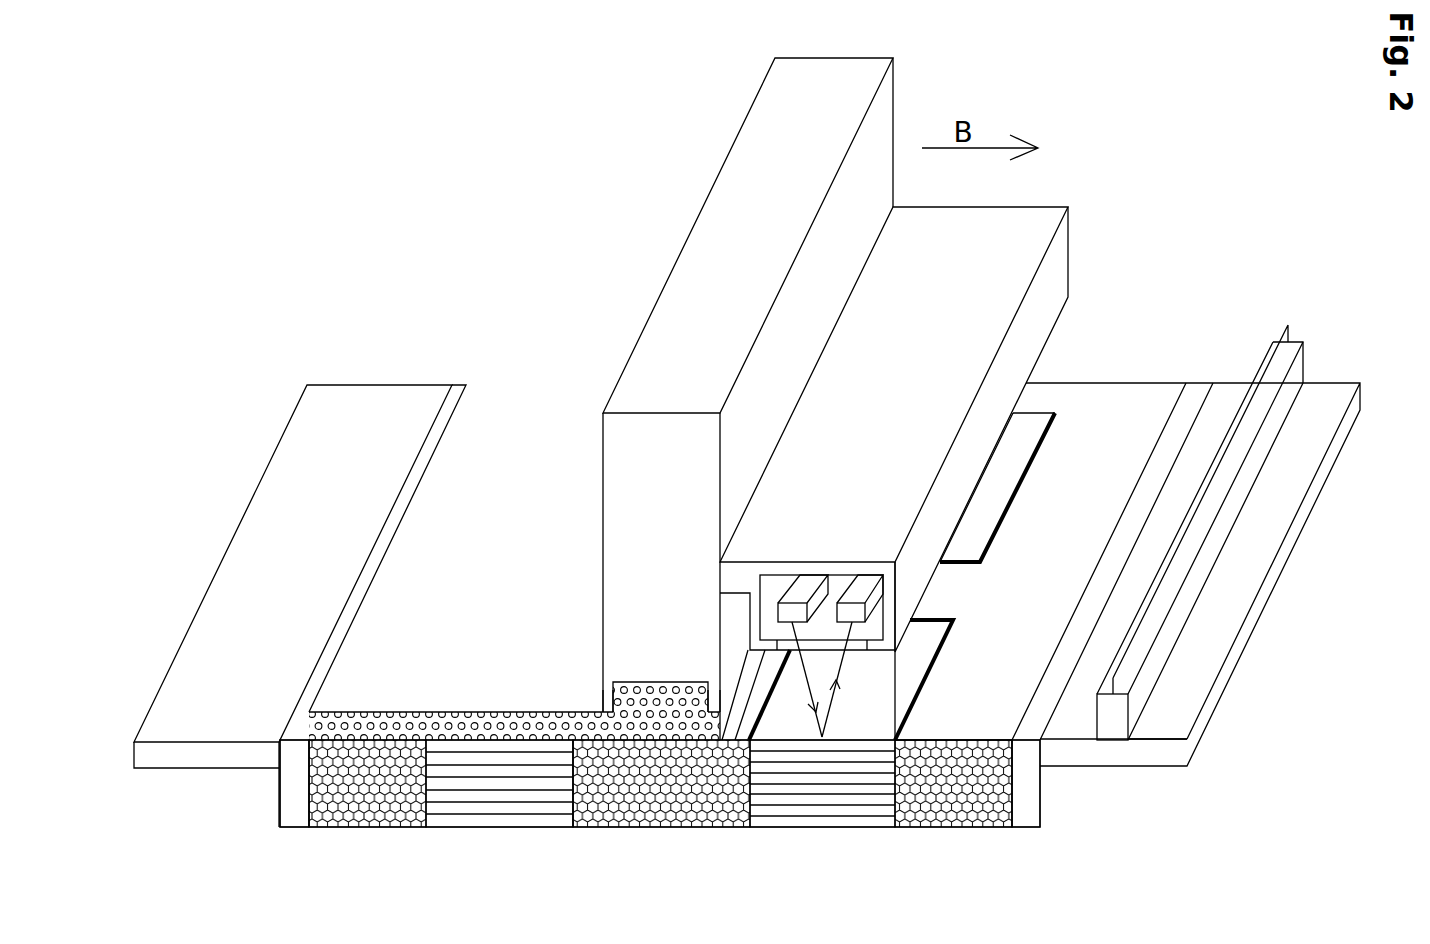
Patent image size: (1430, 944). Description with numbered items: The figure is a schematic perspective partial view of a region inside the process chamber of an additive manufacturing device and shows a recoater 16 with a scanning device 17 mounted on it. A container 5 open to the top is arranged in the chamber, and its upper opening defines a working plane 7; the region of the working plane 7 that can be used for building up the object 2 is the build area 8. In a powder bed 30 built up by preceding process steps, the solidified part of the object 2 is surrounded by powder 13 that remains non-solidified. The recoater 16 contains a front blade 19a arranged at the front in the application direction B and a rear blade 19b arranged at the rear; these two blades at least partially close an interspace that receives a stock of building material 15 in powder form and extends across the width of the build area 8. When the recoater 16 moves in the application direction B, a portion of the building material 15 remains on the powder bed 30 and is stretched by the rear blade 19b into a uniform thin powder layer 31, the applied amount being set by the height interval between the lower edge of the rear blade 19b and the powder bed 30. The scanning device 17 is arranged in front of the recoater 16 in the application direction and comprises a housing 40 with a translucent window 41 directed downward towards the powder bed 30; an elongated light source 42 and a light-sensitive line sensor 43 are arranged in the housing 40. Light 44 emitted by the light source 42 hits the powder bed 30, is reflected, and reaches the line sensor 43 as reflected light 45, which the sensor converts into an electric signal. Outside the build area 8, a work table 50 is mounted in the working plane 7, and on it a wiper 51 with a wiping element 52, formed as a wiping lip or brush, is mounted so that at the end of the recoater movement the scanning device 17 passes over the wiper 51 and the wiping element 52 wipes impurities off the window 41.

The object 2 is at (928, 632).
The container 5 is at (297, 788).
The working plane 7 is at (1163, 729).
The build area 8 is at (929, 728).
The powder 13 is at (342, 802).
The building material 15 is at (657, 693).
The recoater 16 is at (759, 185).
The scanning device 17 is at (876, 391).
The front blade 19a is at (713, 697).
The rear blade 19b is at (608, 700).
The powder bed 30 is at (977, 778).
The powder layer 31 is at (308, 718).
The housing 40 is at (1071, 272).
The window 41 is at (853, 647).
The light source 42 is at (802, 585).
The line sensor 43 is at (858, 585).
The light 44 is at (797, 679).
The reflected light 45 is at (848, 679).
The work table 50 is at (297, 522).
The wiper 51 is at (1110, 727).
The wiping element 52 is at (1286, 327).